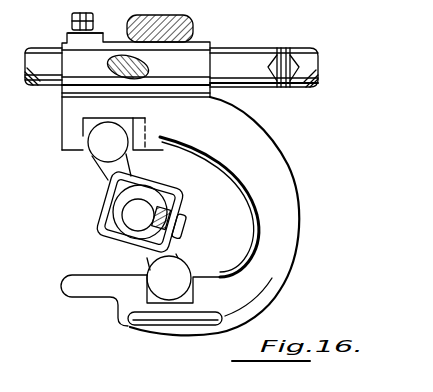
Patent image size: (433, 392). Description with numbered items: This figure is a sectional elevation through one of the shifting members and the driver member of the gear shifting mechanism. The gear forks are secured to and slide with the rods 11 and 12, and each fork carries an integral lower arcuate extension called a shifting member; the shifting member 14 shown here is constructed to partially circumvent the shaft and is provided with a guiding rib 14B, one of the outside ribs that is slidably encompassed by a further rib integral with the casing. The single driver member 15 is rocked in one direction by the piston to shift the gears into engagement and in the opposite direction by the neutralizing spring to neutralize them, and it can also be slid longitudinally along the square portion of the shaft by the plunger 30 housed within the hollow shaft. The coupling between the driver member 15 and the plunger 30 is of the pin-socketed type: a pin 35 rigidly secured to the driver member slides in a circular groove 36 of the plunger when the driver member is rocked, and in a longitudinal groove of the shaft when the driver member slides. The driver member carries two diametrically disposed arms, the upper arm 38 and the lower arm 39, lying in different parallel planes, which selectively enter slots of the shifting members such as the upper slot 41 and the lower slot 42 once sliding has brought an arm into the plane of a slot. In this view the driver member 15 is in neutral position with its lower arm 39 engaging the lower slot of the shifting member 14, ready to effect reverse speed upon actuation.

The rod 11 is at (35, 48).
The rod 12 is at (286, 50).
The shifting member 14 is at (279, 274).
The guiding rib 14B is at (135, 330).
The driver member 15 is at (100, 200).
The plunger 30 is at (127, 223).
The pin 35 is at (175, 212).
The circular groove 36 is at (150, 205).
The upper arm 38 is at (92, 160).
The lower arm 39 is at (183, 263).
The upper slot 41 is at (90, 131).
The lower slot 42 is at (152, 295).